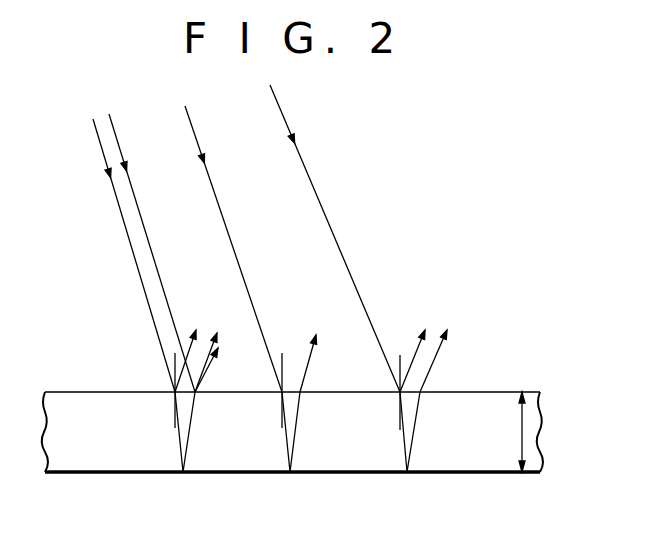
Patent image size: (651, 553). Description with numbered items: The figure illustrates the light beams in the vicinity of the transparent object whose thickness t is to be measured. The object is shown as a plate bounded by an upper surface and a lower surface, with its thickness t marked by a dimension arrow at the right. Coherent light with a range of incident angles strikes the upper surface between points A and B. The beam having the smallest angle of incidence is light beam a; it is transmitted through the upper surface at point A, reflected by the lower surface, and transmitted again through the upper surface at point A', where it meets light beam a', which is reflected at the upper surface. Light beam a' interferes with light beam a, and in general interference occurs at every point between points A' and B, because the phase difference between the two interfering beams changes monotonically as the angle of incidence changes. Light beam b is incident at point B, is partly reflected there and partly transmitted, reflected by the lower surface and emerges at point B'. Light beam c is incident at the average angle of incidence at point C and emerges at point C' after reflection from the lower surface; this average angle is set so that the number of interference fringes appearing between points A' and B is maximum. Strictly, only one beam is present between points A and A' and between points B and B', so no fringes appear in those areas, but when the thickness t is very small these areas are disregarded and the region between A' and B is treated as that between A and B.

The light beam a is at (129, 255).
The light beam a' is at (152, 253).
The light beam b is at (343, 252).
The light beam c is at (240, 252).
The point A is at (162, 401).
The point A' is at (212, 378).
The point B is at (390, 401).
The point B' is at (438, 376).
The point C is at (273, 412).
The point C' is at (316, 382).
The thickness t is at (514, 432).